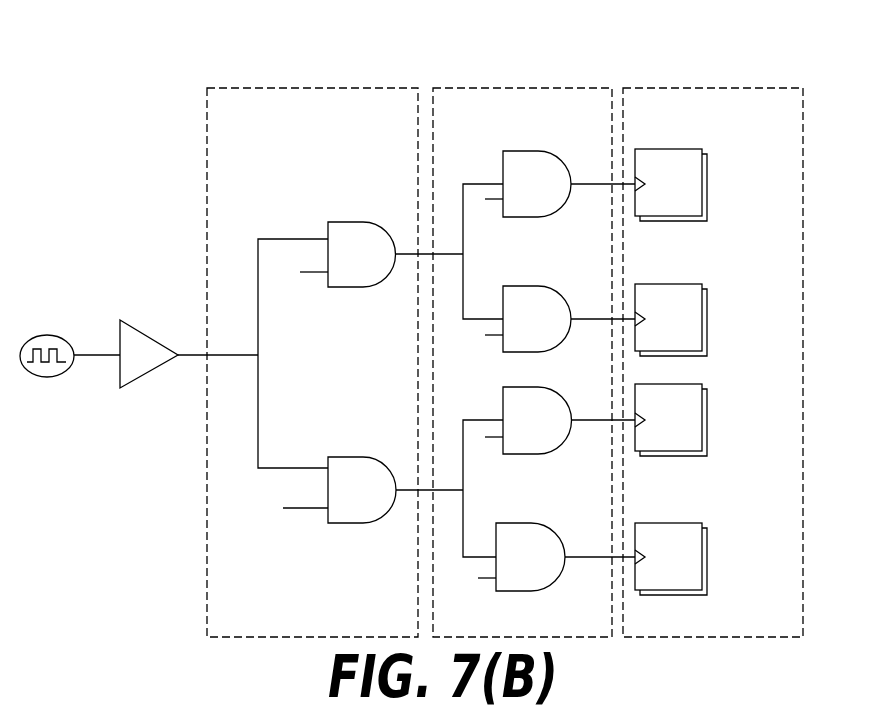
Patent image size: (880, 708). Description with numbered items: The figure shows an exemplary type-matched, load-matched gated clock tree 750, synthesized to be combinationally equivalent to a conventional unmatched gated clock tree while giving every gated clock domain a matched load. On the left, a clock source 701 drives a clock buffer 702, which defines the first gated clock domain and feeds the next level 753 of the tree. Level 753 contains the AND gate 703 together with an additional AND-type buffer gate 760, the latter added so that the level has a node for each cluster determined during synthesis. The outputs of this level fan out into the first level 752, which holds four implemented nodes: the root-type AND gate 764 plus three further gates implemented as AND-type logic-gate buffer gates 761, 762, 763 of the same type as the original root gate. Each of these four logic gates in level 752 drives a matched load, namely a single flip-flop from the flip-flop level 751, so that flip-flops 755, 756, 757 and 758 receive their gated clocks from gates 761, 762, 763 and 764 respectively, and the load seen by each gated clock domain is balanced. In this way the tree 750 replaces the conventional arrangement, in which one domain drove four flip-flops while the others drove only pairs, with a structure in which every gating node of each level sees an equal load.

The clock source 701 is at (45, 334).
The clock buffer 702 is at (152, 336).
The AND gate 703 is at (350, 457).
The type-matched, load-matched gated clock tree 750 is at (508, 319).
The flip-flop block 751 is at (697, 88).
The first level 752 is at (525, 88).
The level 753 is at (302, 88).
The flip-flop 755 is at (676, 148).
The flip-flop 756 is at (678, 283).
The flip-flop 757 is at (698, 384).
The flip-flop 758 is at (690, 522).
The AND gate 760 is at (355, 288).
The AND-type logic-gate buffer gate 761 is at (550, 152).
The AND-type logic-gate buffer gate 762 is at (542, 287).
The AND-type logic-gate buffer gate 763 is at (542, 388).
The AND gate 764 is at (540, 524).